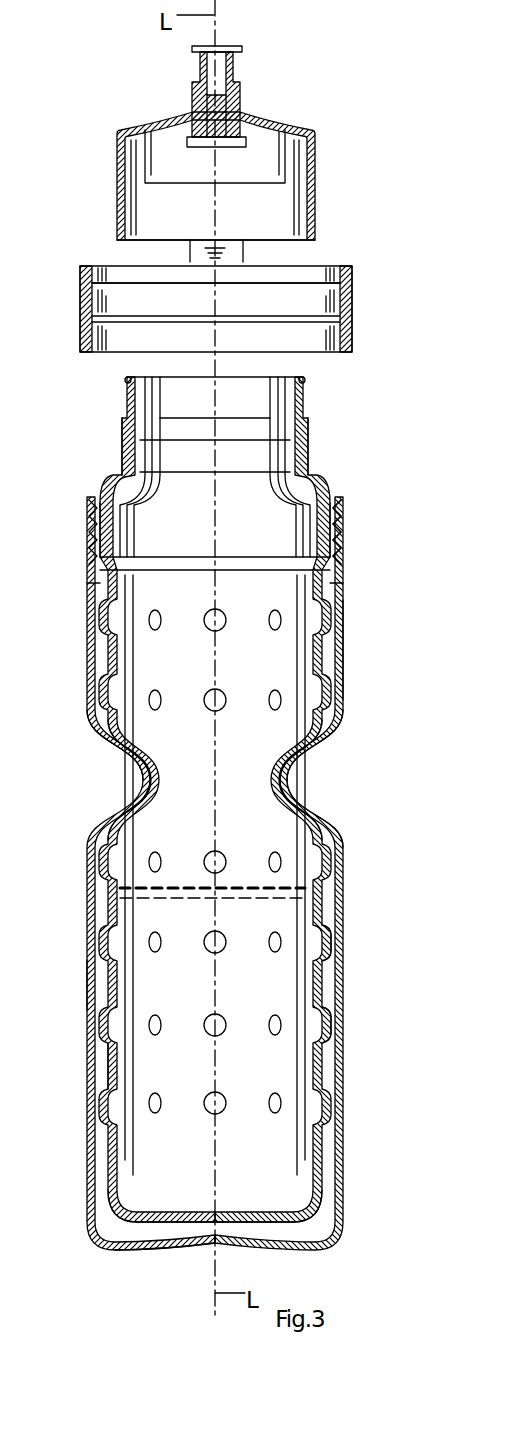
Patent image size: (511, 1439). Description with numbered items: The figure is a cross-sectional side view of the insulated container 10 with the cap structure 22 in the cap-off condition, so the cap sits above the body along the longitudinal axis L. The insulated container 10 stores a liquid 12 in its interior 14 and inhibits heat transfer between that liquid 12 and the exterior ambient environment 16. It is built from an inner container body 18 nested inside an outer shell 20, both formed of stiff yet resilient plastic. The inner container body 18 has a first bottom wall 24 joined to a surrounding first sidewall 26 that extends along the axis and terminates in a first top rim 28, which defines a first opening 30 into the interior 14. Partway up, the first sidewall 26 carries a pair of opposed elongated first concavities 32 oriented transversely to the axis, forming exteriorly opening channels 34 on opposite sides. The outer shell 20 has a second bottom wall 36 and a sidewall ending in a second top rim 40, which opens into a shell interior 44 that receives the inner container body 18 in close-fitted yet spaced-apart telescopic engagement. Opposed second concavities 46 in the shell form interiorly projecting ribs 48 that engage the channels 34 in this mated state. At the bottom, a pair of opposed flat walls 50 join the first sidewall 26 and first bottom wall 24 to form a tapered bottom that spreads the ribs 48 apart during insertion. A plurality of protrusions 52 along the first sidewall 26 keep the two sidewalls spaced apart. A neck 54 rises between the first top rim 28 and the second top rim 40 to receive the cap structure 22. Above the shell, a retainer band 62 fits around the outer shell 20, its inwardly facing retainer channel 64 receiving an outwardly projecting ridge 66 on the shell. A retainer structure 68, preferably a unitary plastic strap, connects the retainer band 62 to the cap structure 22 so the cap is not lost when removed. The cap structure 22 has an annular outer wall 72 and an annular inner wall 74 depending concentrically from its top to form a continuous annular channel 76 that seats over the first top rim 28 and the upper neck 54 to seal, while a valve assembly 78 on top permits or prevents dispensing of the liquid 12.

The insulated container 10 is at (276, 86).
The liquid 12 is at (135, 898).
The interior 14 is at (226, 676).
The exterior ambient environment 16 is at (363, 850).
The inner container body 18 is at (107, 978).
The outer shell 20 is at (88, 636).
The cap structure 22 is at (318, 168).
The first bottom wall 24 is at (245, 1228).
The first sidewall 26 is at (116, 1074).
The first top rim 28 is at (126, 378).
The first opening 30 is at (290, 378).
The first concavities 32 is at (141, 763).
The channels 34 is at (108, 758).
The second bottom wall 36 is at (180, 1251).
The second top rim 40 is at (94, 501).
The shell interior 44 is at (327, 664).
The second concavities 46 is at (300, 778).
The ribs 48 is at (140, 815).
The flat walls 50 is at (121, 1191).
The protrusions 52 is at (323, 1018).
The neck 54 is at (311, 433).
The retainer band 62 is at (353, 329).
The retainer channel 64 is at (236, 311).
The ridge 66 is at (94, 546).
The retainer structure 68 is at (0, 226).
The annular outer wall 72 is at (117, 172).
The annular inner wall 74 is at (156, 161).
The annular channel 76 is at (137, 148).
The valve assembly 78 is at (195, 94).